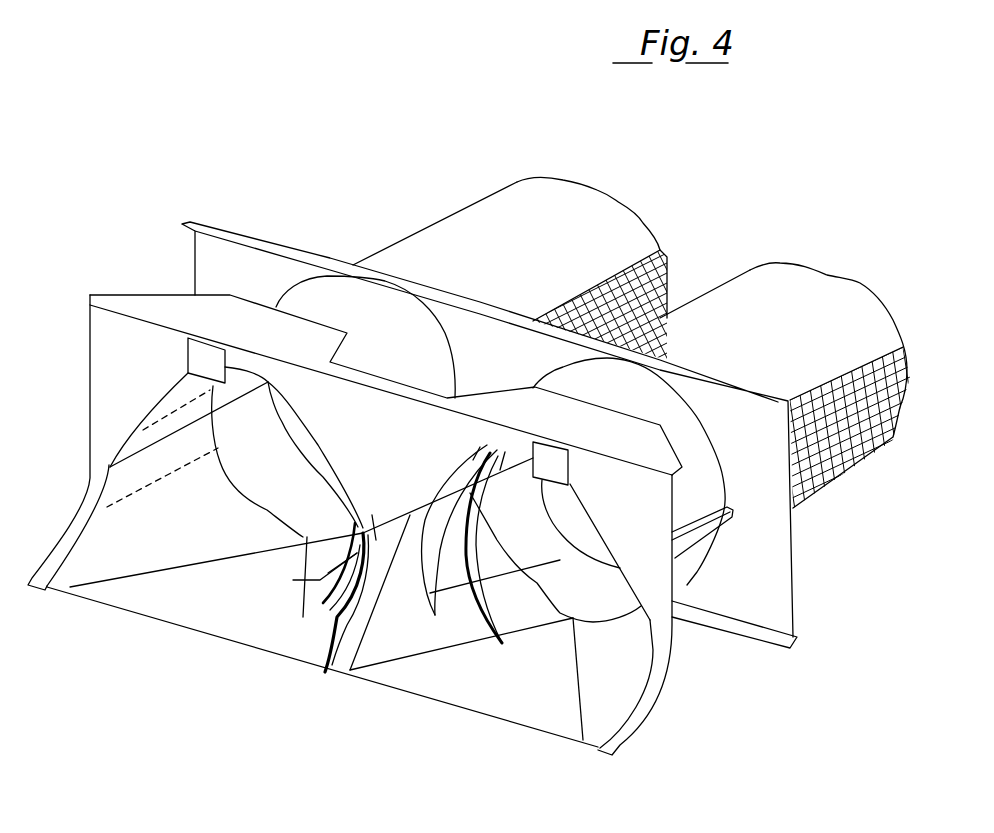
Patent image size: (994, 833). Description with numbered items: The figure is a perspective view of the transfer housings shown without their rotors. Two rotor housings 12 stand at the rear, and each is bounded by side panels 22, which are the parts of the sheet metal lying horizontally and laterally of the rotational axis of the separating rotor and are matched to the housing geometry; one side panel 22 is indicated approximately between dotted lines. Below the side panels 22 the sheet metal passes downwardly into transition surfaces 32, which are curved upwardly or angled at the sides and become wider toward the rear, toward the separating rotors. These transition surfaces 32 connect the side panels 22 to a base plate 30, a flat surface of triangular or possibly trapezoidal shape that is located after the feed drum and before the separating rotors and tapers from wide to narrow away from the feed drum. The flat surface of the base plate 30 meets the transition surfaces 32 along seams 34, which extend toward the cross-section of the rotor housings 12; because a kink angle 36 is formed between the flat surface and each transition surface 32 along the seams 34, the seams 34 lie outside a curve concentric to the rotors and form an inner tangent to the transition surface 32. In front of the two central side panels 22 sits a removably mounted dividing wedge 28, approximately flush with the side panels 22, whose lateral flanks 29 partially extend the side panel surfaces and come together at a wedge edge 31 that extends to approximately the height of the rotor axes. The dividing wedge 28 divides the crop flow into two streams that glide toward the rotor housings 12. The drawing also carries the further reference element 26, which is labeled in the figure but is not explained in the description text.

The rotor housing 12 is at (503, 262).
The side panel 22 is at (125, 477).
The light beam 26 is at (328, 573).
The dividing wedge 28 is at (375, 513).
The lateral flank 29 is at (357, 527).
The base plate 30 is at (214, 617).
The wedge edge 31 is at (305, 617).
The transition surface 32 is at (124, 557).
The seam 34 is at (137, 573).
The kink angle 36 is at (432, 653).